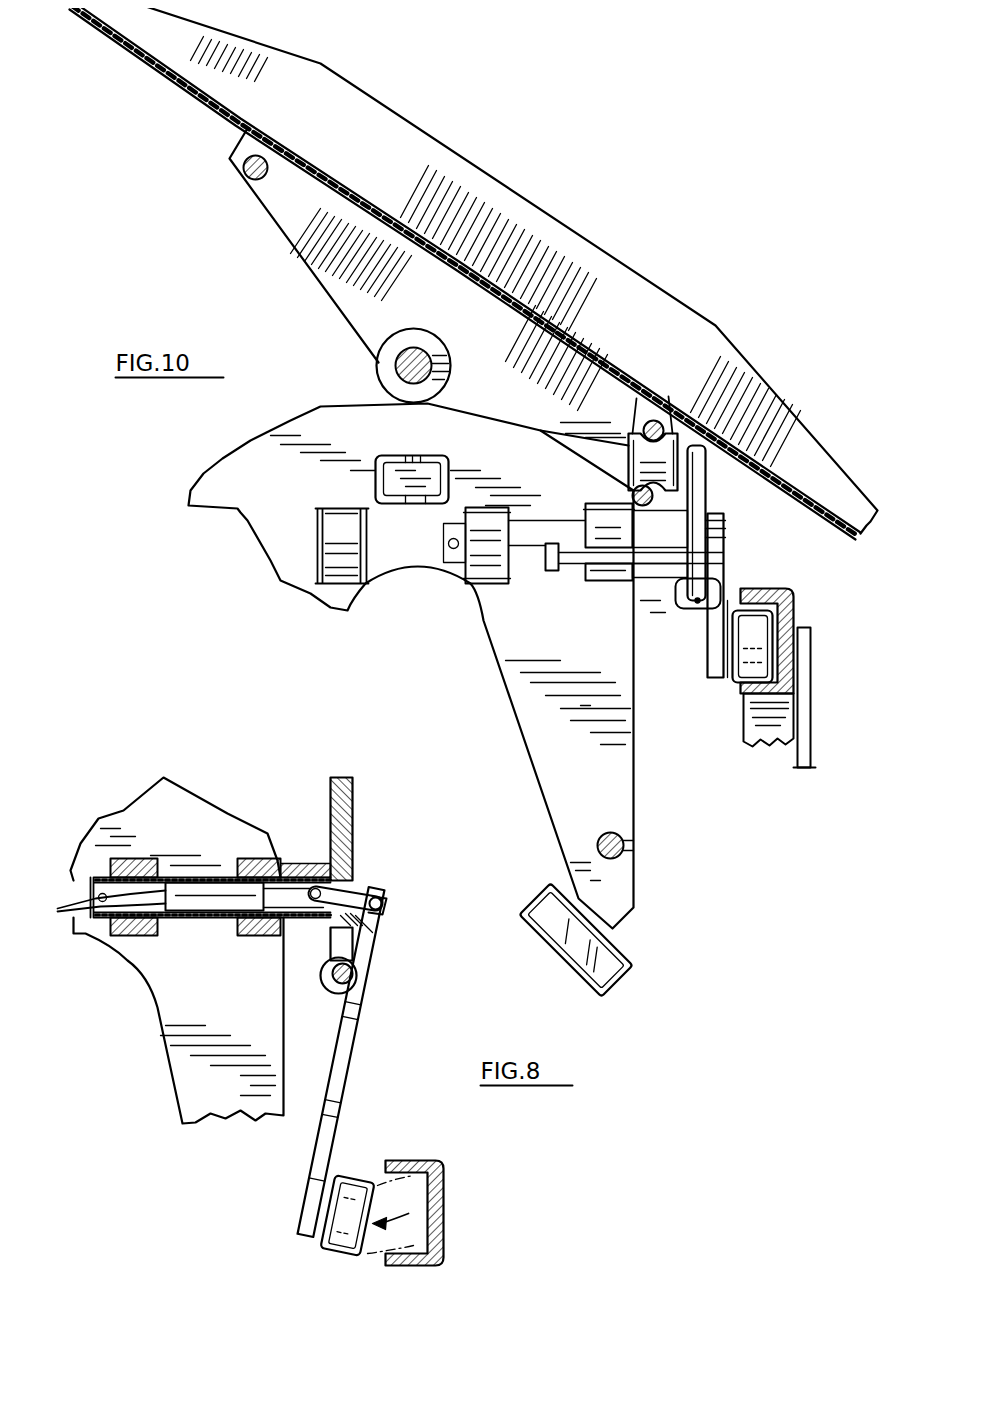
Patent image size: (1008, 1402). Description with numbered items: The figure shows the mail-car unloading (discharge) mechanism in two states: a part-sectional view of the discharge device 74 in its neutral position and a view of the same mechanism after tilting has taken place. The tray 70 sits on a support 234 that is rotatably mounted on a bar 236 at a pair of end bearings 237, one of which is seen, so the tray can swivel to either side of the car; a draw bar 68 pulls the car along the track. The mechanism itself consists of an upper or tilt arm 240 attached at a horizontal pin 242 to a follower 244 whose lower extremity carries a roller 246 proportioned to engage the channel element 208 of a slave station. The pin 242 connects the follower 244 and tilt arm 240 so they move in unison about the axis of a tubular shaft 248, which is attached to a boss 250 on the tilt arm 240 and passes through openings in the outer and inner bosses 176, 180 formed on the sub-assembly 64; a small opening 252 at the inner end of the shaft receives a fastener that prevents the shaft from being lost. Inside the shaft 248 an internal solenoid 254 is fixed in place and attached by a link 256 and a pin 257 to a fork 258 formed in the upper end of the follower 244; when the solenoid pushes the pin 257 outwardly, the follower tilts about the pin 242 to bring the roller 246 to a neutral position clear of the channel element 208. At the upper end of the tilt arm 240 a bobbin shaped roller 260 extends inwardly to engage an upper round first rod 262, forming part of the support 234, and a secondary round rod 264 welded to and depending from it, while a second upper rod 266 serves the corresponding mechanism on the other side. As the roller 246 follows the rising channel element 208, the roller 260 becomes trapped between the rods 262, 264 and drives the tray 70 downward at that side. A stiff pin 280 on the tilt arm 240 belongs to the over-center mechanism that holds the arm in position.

In FIG. 10, the sub-assembly 64 is at (647, 752).
In FIG. 8, the sub-assembly 64 is at (153, 1042).
In FIG. 10, the draw bar 68 is at (395, 468).
In FIG. 10, the tray 70 is at (633, 280).
In FIG. 8, the discharge device 74 is at (390, 1013).
In FIG. 10, the outer boss 176 is at (593, 533).
In FIG. 8, the outer boss 176 is at (253, 937).
In FIG. 10, the inner boss 180 is at (467, 583).
In FIG. 8, the inner boss 180 is at (137, 937).
In FIG. 10, the channel element 208 is at (793, 600).
In FIG. 8, the channel element 208 is at (417, 1160).
In FIG. 10, the support 234 is at (340, 275).
In FIG. 10, the bar 236 is at (395, 367).
In FIG. 10, the end bearing 237 is at (378, 350).
In FIG. 10, the tilt arm 240 is at (705, 488).
In FIG. 8, the tilt arm 240 is at (352, 802).
In FIG. 8, the horizontal pin 242 is at (325, 987).
In FIG. 10, the follower 244 is at (725, 572).
In FIG. 8, the follower 244 is at (352, 1080).
In FIG. 10, the roller 246 is at (762, 613).
In FIG. 8, the roller 246 is at (345, 1233).
In FIG. 8, the tubular shaft 248 is at (187, 870).
In FIG. 10, the boss 250 is at (652, 578).
In FIG. 8, the boss 250 is at (303, 867).
In FIG. 8, the small opening 252 is at (76, 880).
In FIG. 8, the internal solenoid 254 is at (203, 888).
In FIG. 8, the link 256 is at (363, 883).
In FIG. 8, the pin 257 is at (385, 893).
In FIG. 8, the fork 258 is at (380, 910).
In FIG. 10, the bobbin shaped roller 260 is at (633, 417).
In FIG. 10, the first rod 262 is at (660, 420).
In FIG. 10, the secondary round rod 264 is at (628, 488).
In FIG. 10, the second upper rod 266 is at (258, 157).
In FIG. 10, the stiff pin 280 is at (580, 568).